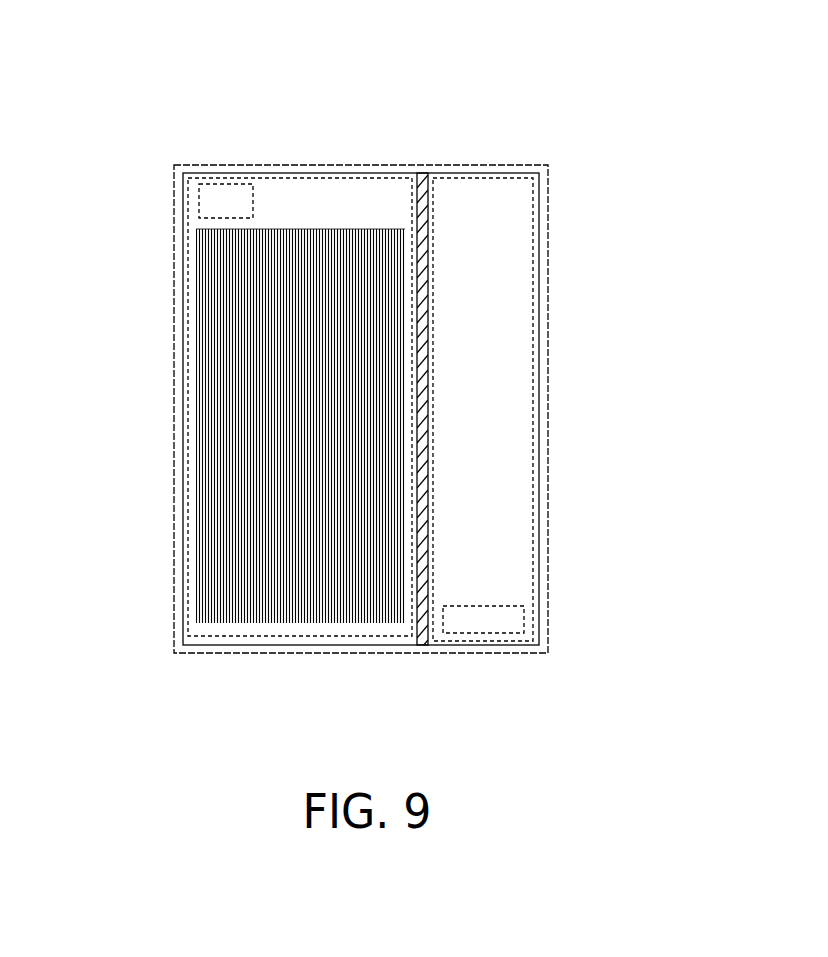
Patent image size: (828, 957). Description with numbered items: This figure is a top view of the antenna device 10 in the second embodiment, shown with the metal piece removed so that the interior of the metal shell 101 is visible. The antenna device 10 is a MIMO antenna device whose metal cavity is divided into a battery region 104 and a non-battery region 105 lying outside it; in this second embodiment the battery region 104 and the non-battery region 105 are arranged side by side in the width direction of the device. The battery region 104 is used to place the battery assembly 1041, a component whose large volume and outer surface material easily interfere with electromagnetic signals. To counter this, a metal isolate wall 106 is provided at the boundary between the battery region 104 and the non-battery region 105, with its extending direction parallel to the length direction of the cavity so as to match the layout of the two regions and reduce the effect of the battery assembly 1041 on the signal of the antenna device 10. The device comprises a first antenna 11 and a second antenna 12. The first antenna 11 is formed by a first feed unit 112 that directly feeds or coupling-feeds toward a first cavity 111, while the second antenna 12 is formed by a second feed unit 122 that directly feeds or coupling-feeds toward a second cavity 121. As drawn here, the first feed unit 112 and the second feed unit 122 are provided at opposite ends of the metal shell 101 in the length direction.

The antenna device 10 is at (82, 30).
The metal shell 101 is at (548, 198).
The battery region 104 is at (188, 352).
The battery assembly 1041 is at (240, 478).
The non-battery region 105 is at (533, 257).
The metal isolate wall 106 is at (420, 180).
The first antenna 11 is at (210, 93).
The first cavity 111 is at (310, 187).
The first feed unit 112 is at (214, 188).
The second antenna 12 is at (660, 557).
The second cavity 121 is at (518, 563).
The second feed unit 122 is at (508, 618).